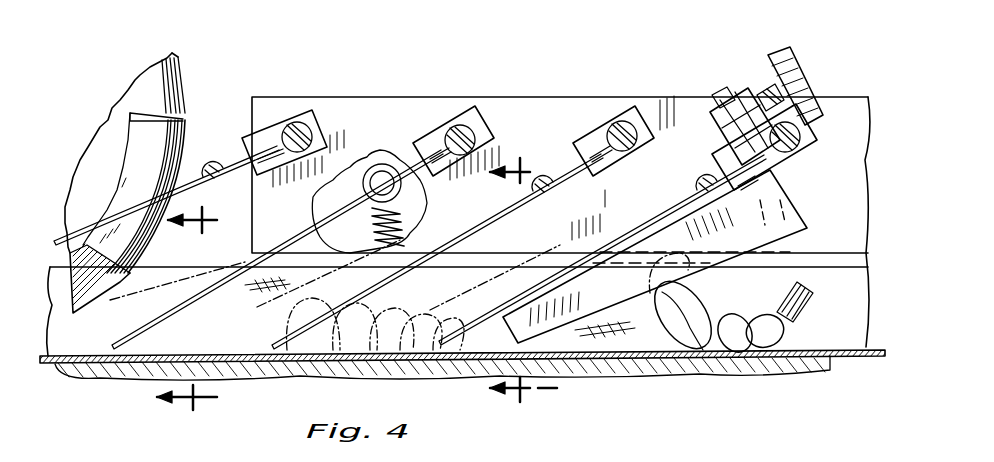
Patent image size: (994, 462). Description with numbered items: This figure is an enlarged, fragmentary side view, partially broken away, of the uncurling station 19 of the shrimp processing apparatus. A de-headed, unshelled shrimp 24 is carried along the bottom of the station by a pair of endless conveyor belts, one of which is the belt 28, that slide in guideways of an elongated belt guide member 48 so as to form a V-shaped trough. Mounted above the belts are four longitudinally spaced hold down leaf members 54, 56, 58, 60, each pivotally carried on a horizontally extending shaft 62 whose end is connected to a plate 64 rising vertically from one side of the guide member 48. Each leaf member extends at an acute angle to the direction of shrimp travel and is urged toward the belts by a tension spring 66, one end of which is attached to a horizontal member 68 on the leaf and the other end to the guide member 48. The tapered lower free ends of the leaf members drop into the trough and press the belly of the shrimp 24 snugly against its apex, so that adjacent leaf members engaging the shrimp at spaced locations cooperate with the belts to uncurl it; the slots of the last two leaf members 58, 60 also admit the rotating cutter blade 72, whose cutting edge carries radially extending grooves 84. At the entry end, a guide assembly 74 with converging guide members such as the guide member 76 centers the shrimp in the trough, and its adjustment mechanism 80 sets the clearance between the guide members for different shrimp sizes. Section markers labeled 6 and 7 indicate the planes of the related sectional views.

The uncurling station 19 is at (596, 76).
The shrimp 24 is at (717, 310).
The endless belt 28 is at (827, 283).
The belt guide member 48 is at (847, 340).
The hold down leaf member 54 is at (666, 213).
The hold down leaf member 56 is at (497, 219).
The hold down leaf member 58 is at (200, 298).
The hold down leaf member 60 is at (145, 166).
The shaft 62 is at (300, 123).
The plate 64 is at (533, 107).
The tension spring 66 is at (412, 188).
The horizontal member 68 is at (213, 162).
The cutter blade 72 is at (176, 60).
The guide assembly 74 is at (793, 160).
The guide member 76 is at (785, 217).
The adjustment mechanism 80 is at (737, 97).
The radially extending groove 84 is at (192, 112).
The section line 6- 6 is at (523, 279).
The section line 7- 7 is at (197, 308).